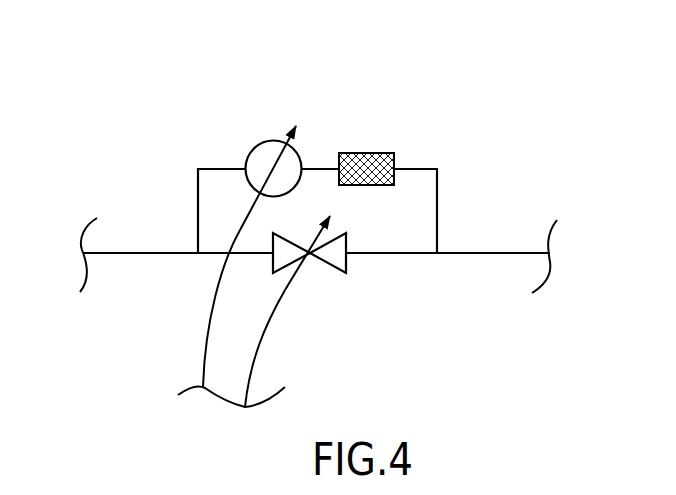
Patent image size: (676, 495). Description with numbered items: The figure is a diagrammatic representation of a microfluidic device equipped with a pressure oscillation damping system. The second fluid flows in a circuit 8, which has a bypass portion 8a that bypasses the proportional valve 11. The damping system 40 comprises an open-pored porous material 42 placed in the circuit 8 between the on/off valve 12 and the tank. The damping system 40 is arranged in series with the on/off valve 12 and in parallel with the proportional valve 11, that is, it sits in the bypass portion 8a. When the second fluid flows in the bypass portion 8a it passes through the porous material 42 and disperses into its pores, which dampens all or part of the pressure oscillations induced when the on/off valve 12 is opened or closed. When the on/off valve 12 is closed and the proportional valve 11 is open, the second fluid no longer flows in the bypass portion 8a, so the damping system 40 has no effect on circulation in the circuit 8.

The circuit 8 is at (470, 222).
The bypass portion 8a is at (438, 182).
The proportional valve 11 is at (348, 243).
The on/off valve 12 is at (293, 153).
The damping system 40 is at (379, 144).
The porous material 42 is at (395, 153).